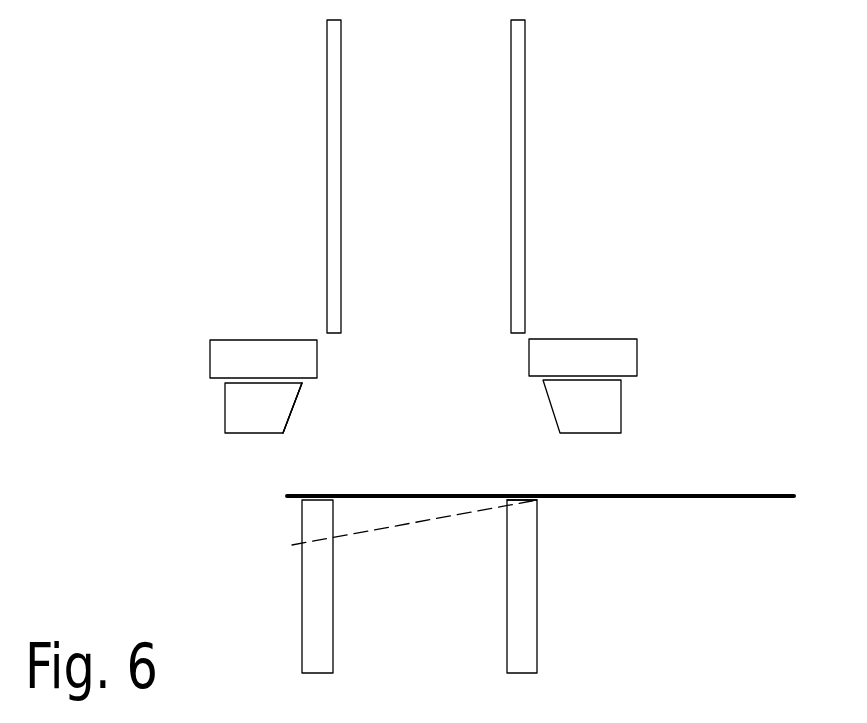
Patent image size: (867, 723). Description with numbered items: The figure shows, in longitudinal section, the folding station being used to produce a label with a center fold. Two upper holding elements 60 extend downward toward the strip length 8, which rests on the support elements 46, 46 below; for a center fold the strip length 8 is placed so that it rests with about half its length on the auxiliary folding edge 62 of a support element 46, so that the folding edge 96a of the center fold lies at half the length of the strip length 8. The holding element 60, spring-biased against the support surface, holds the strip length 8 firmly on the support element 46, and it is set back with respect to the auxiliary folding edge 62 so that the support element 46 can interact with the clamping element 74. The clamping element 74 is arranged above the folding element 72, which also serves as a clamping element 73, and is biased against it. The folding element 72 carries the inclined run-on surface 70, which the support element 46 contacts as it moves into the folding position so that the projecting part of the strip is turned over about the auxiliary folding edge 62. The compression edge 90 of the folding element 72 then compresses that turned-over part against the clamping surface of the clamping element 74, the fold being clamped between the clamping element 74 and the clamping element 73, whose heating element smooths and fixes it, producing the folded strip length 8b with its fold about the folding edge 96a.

The holding element 60 is at (332, 167).
The clamping element 74 is at (263, 352).
The inclined run-on surface 70 is at (297, 403).
The folding element 72 is at (267, 413).
The clamping element 73 is at (292, 408).
The compression edge 90 is at (542, 382).
The strip length 8 is at (405, 490).
The folding edge of the center fold 96a is at (570, 492).
The folded strip length 8b is at (426, 523).
The support element 46 is at (320, 603).
The auxiliary folding edge 62 is at (537, 500).